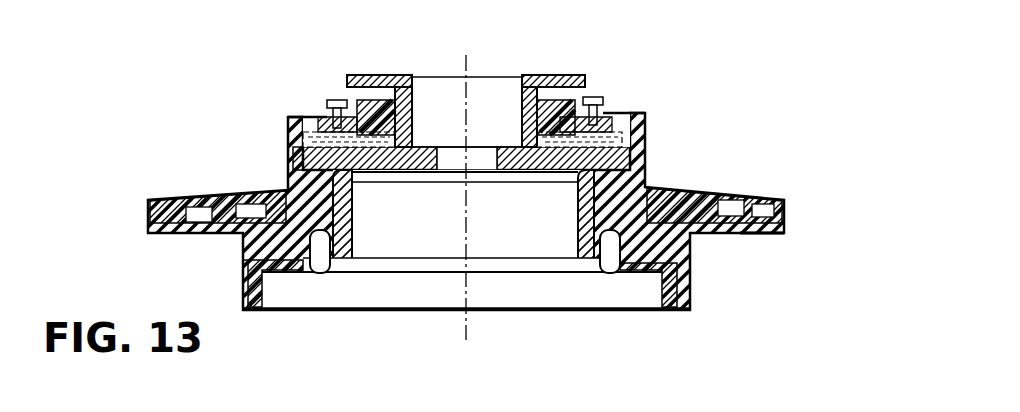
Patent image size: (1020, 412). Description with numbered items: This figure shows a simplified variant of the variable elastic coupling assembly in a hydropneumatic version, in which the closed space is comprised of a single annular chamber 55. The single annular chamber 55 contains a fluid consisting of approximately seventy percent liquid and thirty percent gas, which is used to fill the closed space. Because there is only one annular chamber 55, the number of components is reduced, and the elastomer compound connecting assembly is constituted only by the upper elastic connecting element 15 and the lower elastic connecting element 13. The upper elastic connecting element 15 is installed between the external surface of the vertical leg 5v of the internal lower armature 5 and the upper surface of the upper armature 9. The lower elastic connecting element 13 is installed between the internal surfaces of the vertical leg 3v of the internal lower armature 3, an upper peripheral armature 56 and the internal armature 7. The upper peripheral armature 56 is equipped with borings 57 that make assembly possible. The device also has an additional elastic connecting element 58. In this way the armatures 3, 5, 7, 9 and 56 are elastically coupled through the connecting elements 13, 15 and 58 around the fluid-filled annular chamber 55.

The internal lower armature 3 is at (513, 168).
The vertical leg 3v is at (577, 228).
The internal lower armature 5 is at (570, 82).
The vertical leg 5v is at (528, 102).
The internal armature 7 is at (667, 290).
The upper armature 9 is at (608, 113).
The lower elastic connecting element 13 is at (283, 267).
The upper elastic connecting element 15 is at (387, 100).
The single annular chamber 55 is at (342, 148).
The upper peripheral armature 56 is at (668, 197).
The borings 57 is at (727, 200).
The additional elastic connecting element 58 is at (775, 232).